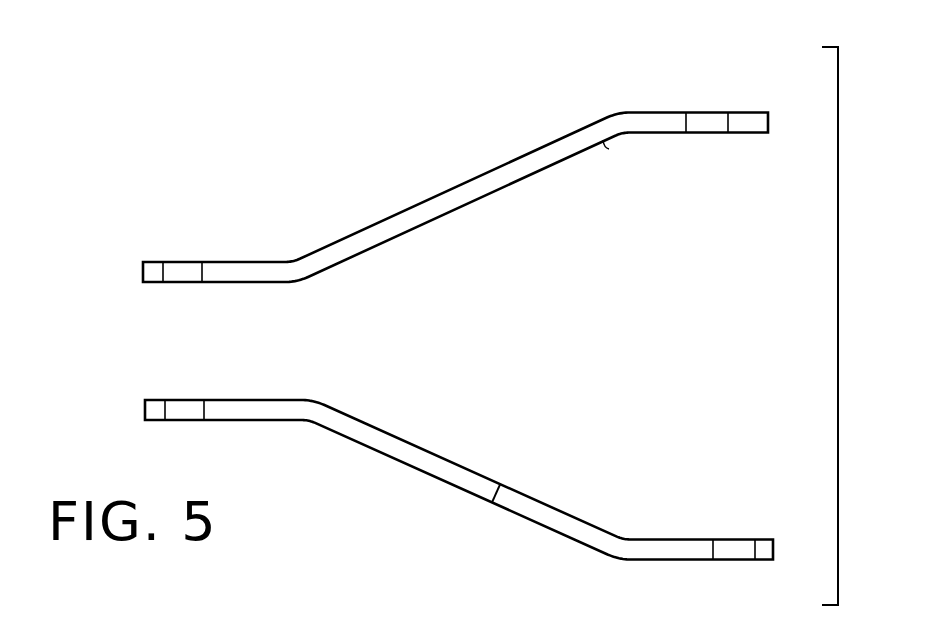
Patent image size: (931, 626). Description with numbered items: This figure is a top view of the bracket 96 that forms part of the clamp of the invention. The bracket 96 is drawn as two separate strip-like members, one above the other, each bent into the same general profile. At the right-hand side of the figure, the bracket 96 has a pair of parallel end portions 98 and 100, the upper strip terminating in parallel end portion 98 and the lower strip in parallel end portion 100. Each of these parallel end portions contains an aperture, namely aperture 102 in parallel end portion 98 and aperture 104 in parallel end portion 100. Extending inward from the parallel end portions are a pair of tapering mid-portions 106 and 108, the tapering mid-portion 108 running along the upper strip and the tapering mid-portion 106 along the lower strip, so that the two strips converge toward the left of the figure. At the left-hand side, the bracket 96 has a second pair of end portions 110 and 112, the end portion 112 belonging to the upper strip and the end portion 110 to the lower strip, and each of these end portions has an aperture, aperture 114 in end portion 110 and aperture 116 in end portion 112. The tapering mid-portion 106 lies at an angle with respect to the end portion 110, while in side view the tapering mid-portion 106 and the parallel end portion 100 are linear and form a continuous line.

The bracket 96 is at (298, 73).
The parallel end portion 98 is at (654, 120).
The parallel end portion 100 is at (680, 547).
The aperture 102 is at (710, 120).
The aperture 104 is at (735, 547).
The tapering mid-portion 106 is at (410, 463).
The tapering mid-portion 108 is at (430, 197).
The end portion 110 is at (240, 403).
The end portion 112 is at (243, 263).
The aperture 114 is at (187, 400).
The aperture 116 is at (178, 272).